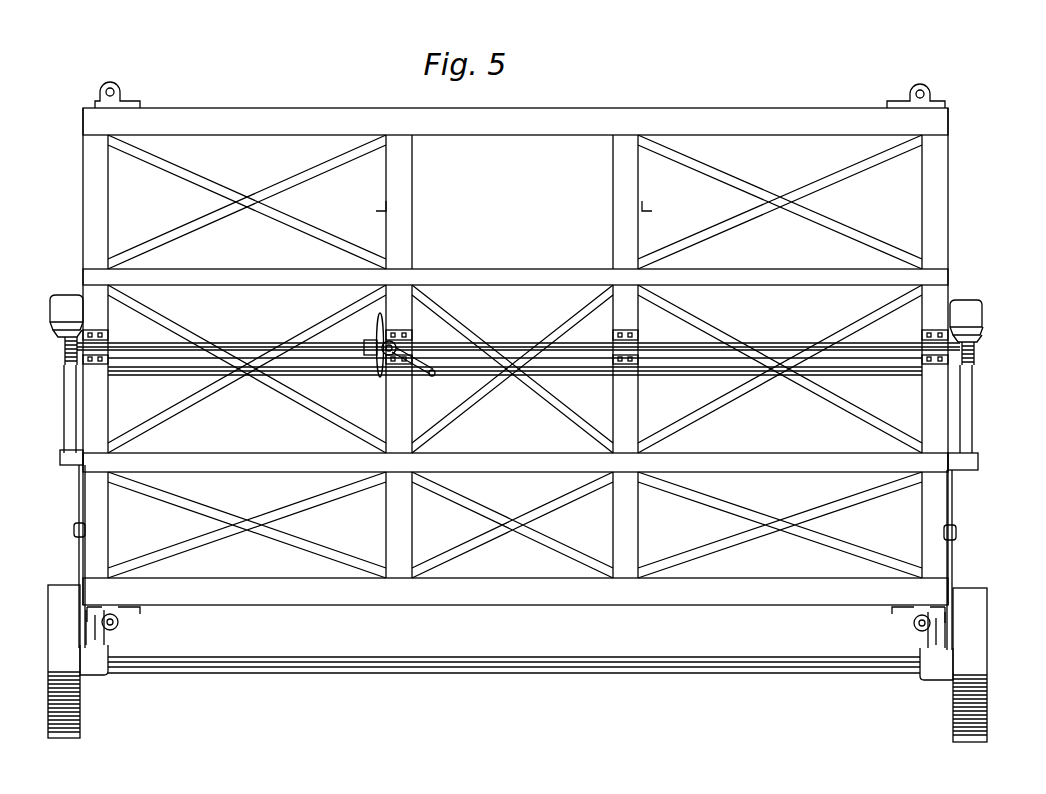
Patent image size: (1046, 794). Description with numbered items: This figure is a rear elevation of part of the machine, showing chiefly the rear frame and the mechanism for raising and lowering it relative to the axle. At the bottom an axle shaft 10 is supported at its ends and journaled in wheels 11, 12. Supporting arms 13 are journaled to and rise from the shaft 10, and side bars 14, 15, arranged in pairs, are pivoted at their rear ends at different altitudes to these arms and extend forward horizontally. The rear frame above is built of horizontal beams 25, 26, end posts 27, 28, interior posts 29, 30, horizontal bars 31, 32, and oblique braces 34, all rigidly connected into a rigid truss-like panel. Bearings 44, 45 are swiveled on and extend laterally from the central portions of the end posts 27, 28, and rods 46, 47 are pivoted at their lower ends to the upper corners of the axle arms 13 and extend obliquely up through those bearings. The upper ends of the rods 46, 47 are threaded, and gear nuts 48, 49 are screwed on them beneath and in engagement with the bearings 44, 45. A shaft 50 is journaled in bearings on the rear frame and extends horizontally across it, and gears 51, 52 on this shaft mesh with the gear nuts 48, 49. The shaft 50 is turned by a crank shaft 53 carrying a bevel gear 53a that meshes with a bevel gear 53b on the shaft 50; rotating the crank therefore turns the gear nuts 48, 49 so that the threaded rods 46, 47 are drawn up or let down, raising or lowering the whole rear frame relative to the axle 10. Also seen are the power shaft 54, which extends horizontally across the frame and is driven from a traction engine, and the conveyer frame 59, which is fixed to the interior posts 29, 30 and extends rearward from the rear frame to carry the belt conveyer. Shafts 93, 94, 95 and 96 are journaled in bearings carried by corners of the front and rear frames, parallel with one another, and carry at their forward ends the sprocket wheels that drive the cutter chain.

The axle shaft 10 is at (470, 660).
The wheel 11 is at (64, 661).
The wheel 12 is at (970, 665).
The supporting arm 13 is at (79, 507).
The side bar 14 is at (70, 466).
The side bar 15 is at (74, 533).
The horizontal beam 25 is at (515, 121).
The horizontal beam 26 is at (515, 591).
The end post 27 is at (95, 356).
The end post 28 is at (935, 356).
The interior post 29 is at (399, 356).
The interior post 30 is at (625, 356).
The horizontal bar 31 is at (515, 277).
The horizontal bar 32 is at (515, 463).
The oblique brace 34 is at (262, 212).
The bearing 44 is at (66, 312).
The bearing 45 is at (966, 317).
The rod 46 is at (64, 402).
The rod 47 is at (973, 392).
The gear nut 48 is at (60, 337).
The gear nut 49 is at (976, 340).
The shaft 50 is at (509, 346).
The gear 51 is at (66, 357).
The gear 52 is at (976, 358).
The crank shaft 53 is at (388, 357).
The bevel gear 53a is at (390, 341).
The bevel gear 53b is at (380, 380).
The power shaft 54 is at (168, 372).
The conveyer frame 59 is at (376, 211).
The shaft 93 is at (116, 88).
The shaft 94 is at (912, 93).
The shaft 95 is at (913, 624).
The shaft 96 is at (119, 623).